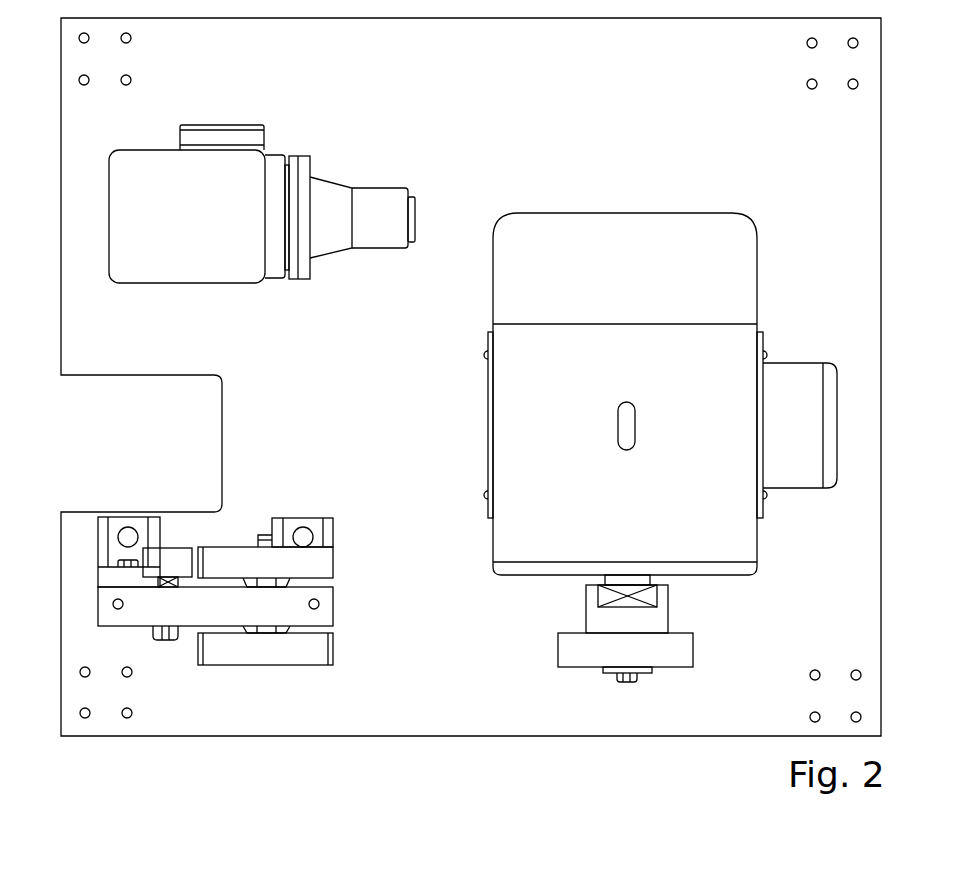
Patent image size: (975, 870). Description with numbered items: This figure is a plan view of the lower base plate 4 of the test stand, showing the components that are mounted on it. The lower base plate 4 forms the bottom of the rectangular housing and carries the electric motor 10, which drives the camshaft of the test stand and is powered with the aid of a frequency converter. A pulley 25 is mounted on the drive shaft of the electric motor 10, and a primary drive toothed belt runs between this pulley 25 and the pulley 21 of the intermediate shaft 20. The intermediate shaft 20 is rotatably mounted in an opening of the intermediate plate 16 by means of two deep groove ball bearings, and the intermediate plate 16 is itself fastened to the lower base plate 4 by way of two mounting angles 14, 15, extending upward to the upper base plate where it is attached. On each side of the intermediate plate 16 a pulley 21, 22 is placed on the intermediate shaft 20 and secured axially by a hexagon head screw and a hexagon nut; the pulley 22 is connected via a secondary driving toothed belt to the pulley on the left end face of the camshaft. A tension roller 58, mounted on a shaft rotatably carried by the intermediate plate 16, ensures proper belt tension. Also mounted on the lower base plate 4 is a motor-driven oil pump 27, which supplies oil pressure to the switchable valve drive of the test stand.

The lower base plate 4 is at (452, 707).
The electric motor 10 is at (530, 551).
The mounting angle 14 is at (102, 539).
The mounting angle 15 is at (318, 529).
The intermediate plate 16 is at (207, 611).
The intermediate shaft 20 is at (263, 635).
The pulley 21 is at (230, 651).
The pulley 22 is at (255, 559).
The pulley 25 is at (684, 644).
The oil pump 27 is at (117, 183).
The tension roller 58 is at (173, 559).